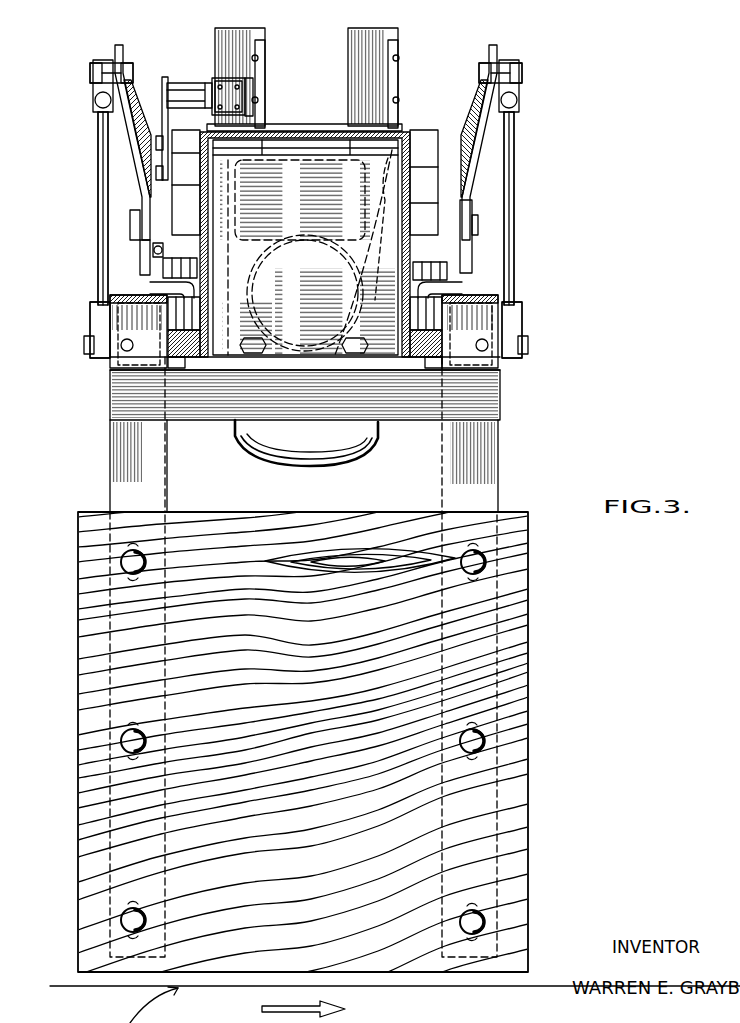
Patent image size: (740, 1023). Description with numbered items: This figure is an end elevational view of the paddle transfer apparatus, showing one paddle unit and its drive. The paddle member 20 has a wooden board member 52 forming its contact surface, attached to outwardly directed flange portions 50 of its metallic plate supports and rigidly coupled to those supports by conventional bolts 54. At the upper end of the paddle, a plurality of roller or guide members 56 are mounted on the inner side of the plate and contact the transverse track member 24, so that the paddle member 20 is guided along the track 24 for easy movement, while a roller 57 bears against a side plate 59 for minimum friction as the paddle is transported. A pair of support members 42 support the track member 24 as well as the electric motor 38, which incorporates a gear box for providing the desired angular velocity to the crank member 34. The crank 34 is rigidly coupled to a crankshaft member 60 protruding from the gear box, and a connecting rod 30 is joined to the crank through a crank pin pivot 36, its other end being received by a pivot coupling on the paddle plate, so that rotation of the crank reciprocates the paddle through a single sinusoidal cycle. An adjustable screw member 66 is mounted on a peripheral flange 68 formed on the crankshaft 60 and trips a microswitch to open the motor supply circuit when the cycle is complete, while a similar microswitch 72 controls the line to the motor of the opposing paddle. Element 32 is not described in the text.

The paddle member 20 is at (508, 401).
The transverse track member 24 is at (174, 343).
The connecting rod 30 is at (98, 185).
The lower rod bracket 32 is at (92, 345).
The crank member 34 is at (116, 50).
The crank pin pivot 36 is at (90, 72).
The electric motor 38 is at (248, 455).
The support member 42 is at (268, 58).
The flange portion 50 is at (485, 470).
The wooden board member 52 is at (372, 512).
The bolt 54 is at (125, 738).
The roller or guide member 56 is at (448, 318).
The roller 57 is at (164, 270).
The side plate 59 is at (410, 160).
The crankshaft member 60 is at (130, 222).
The adjustable screw member 66 is at (152, 262).
The peripheral flange 68 is at (472, 252).
The microswitch 72 is at (212, 85).